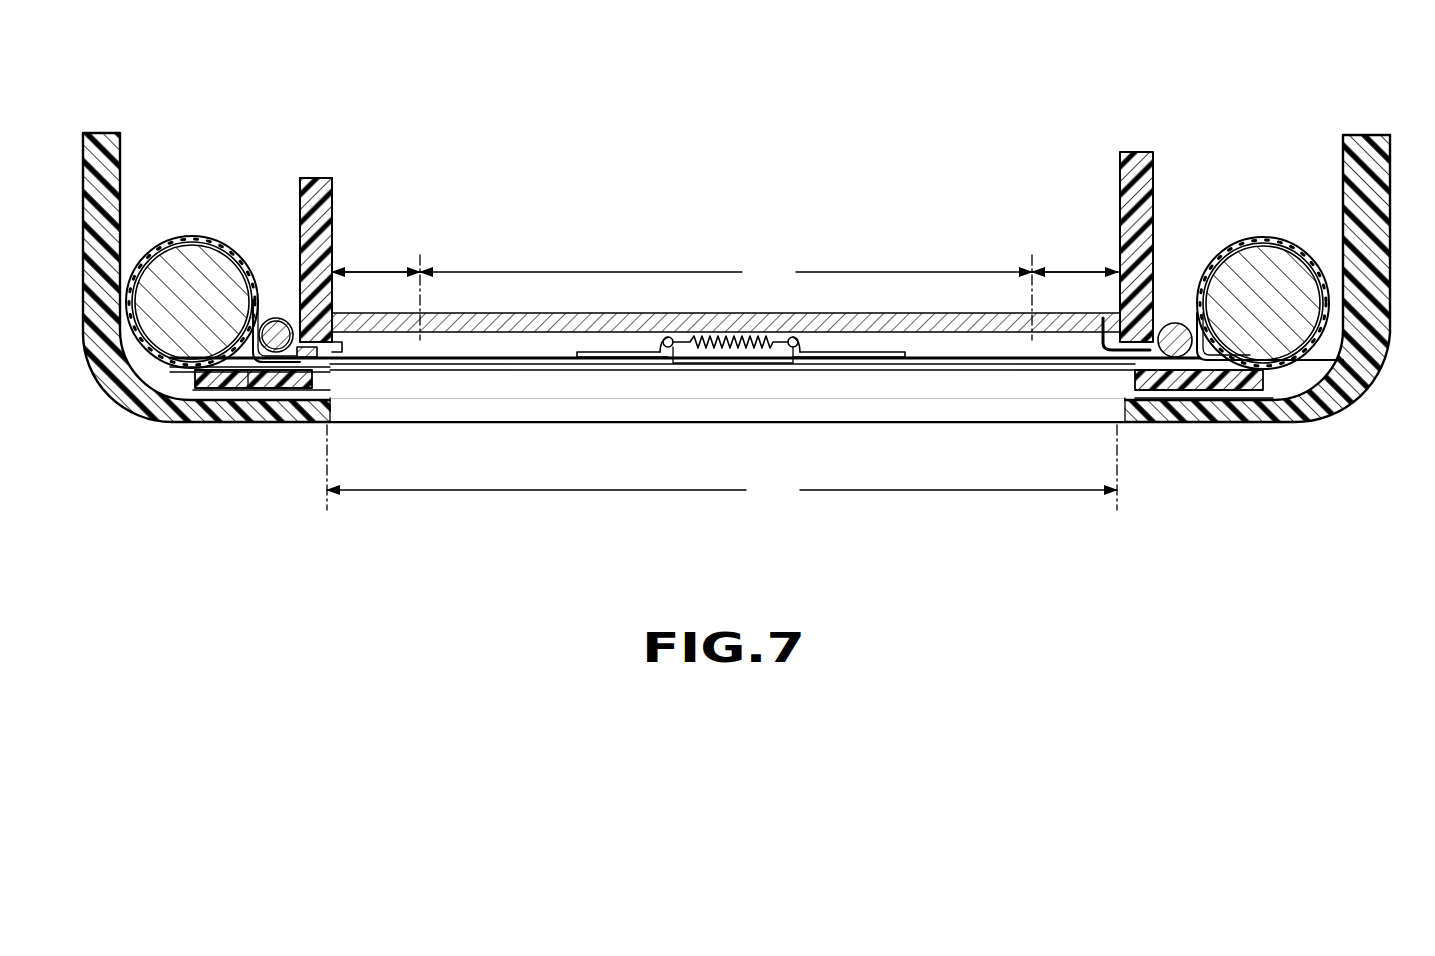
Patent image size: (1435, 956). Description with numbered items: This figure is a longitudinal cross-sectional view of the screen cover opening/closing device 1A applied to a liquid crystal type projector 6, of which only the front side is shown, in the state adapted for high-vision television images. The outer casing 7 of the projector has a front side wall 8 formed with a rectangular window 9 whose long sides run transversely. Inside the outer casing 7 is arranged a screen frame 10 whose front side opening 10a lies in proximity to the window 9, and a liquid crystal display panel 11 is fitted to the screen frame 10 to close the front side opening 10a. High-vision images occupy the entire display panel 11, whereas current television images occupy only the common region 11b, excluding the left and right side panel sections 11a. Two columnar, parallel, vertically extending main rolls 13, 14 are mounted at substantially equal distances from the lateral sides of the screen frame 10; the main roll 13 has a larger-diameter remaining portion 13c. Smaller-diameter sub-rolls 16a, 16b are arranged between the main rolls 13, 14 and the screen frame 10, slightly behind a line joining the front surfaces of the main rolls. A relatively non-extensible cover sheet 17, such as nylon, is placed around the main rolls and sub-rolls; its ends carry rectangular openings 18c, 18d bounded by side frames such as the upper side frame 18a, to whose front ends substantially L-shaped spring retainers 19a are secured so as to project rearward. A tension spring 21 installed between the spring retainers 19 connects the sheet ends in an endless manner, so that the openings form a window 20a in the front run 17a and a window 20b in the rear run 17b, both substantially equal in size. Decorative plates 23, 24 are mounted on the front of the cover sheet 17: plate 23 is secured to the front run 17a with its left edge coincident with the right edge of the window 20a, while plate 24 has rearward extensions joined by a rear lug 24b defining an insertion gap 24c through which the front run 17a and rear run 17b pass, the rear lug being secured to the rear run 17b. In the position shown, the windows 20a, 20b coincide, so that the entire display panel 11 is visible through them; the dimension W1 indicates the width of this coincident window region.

The liquid crystal type projector 6 is at (1262, 475).
The outer casing 7 is at (1345, 412).
The front side wall 8 is at (1228, 413).
The rectangular window 9 is at (1125, 405).
The screen frame 10 is at (1122, 190).
The front side opening 10a is at (355, 360).
The liquid crystal display panel 11 is at (533, 333).
The side panel section 11a is at (725, 289).
The common region 11b is at (726, 273).
The main roll 13 is at (1283, 265).
The remaining portion of main roll 13c is at (1250, 260).
The main roll 14 is at (177, 258).
The sub-roll 16a is at (1173, 322).
The sub-roll 16b is at (270, 322).
The cover sheet 17 is at (165, 388).
The front run 17a is at (455, 371).
The rear run 17b is at (480, 355).
The upper side frame 18a is at (608, 351).
The rectangular opening 18c is at (1102, 322).
The rectangular opening 18d is at (322, 182).
The spring retainer 19 is at (852, 351).
The spring retainer 19a is at (671, 338).
The window 20a is at (315, 358).
The window 20b is at (306, 176).
The tension spring 21 is at (714, 338).
The decorative plate 23 is at (1198, 392).
The decorative plate 24 is at (223, 392).
The rear lug 24b is at (277, 316).
The insertion gap 24c is at (283, 392).
The screen cover opening/closing device 1A is at (958, 378).
The width dimension W1 is at (722, 467).